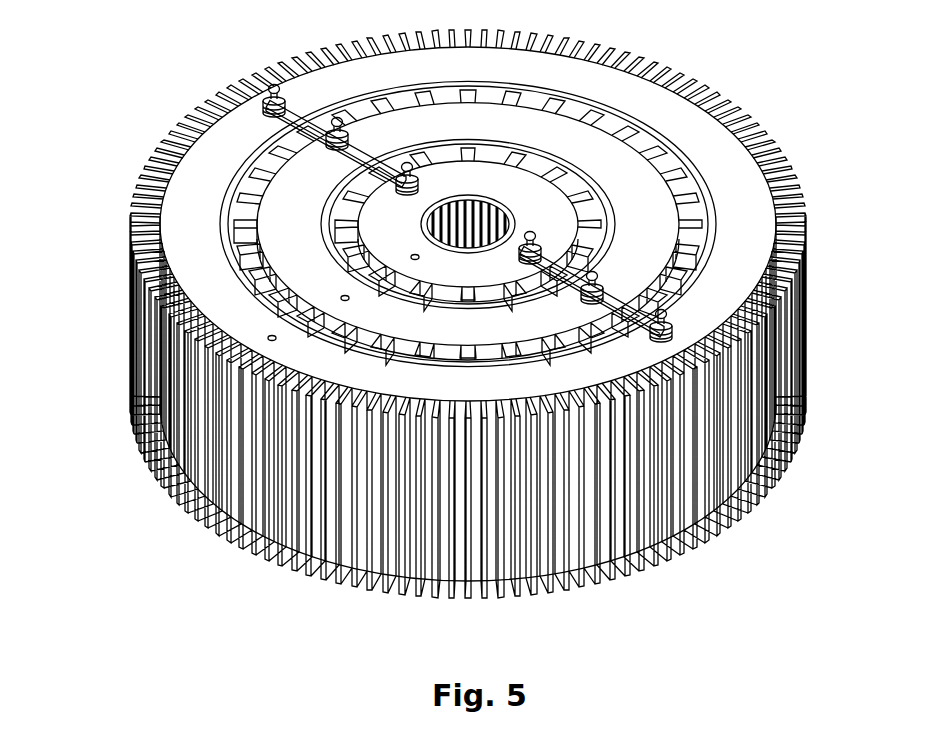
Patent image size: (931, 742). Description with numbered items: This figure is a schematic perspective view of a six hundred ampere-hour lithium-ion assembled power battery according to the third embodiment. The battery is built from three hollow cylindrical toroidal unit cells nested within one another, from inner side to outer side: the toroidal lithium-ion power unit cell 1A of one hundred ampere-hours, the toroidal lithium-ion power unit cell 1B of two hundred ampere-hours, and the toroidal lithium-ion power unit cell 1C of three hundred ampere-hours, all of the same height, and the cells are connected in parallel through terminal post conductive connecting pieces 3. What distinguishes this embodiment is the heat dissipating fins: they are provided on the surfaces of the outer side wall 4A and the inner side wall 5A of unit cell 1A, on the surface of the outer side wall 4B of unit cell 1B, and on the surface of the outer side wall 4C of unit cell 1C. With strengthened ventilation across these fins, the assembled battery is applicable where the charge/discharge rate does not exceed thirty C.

The toroidal lithium-ion power unit cell 1A is at (517, 195).
The toroidal lithium-ion power unit cell 1B is at (651, 226).
The toroidal lithium-ion power unit cell 1C is at (757, 235).
The terminal post conductive connecting piece 3 is at (302, 117).
The outer side wall 4A is at (368, 258).
The outer side wall 4B is at (310, 300).
The outer side wall 4C is at (262, 354).
The inner side wall 5A is at (423, 223).